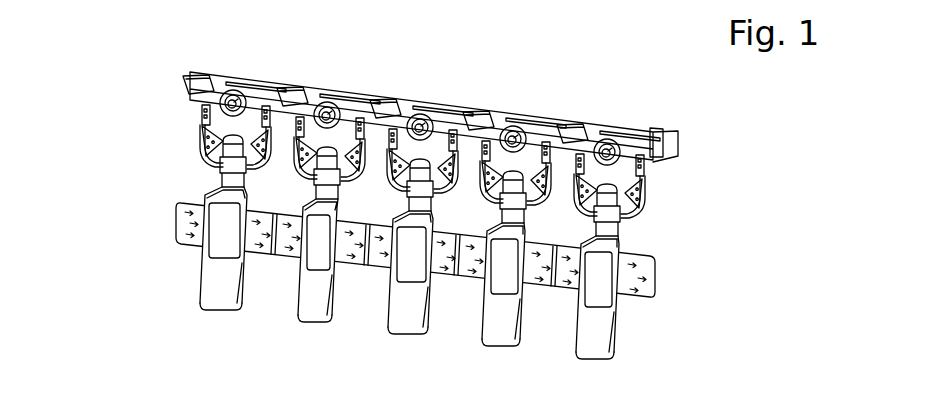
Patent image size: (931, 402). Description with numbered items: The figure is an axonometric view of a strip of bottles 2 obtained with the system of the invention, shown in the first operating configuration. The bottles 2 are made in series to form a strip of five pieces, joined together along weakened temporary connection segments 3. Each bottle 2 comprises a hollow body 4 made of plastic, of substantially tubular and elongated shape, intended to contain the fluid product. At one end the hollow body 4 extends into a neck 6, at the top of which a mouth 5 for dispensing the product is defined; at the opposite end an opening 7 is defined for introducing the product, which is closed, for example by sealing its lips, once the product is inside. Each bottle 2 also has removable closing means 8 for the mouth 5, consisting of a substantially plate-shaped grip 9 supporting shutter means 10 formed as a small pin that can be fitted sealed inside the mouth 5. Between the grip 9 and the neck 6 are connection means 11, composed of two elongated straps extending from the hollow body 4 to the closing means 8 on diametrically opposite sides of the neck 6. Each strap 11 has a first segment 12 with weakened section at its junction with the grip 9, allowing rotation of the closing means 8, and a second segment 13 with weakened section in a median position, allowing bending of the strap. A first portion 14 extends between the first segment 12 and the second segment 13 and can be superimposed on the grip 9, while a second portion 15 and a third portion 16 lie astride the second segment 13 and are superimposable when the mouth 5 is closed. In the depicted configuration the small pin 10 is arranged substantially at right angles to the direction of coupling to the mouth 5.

The bottle 2 is at (414, 268).
The weakened temporary connection segment 3 is at (290, 100).
The hollow body 4 is at (214, 293).
The mouth 5 is at (236, 95).
The neck 6 is at (628, 225).
The opening 7 is at (316, 323).
The closing means 8 is at (431, 202).
The grip 9 is at (367, 98).
The shutter means 10 is at (427, 90).
The connection means 11 is at (424, 187).
The first segment 12 is at (196, 77).
The second segment 13 is at (201, 142).
The first portion 14 is at (203, 106).
The second portion 15 is at (203, 131).
The third portion 16 is at (211, 158).